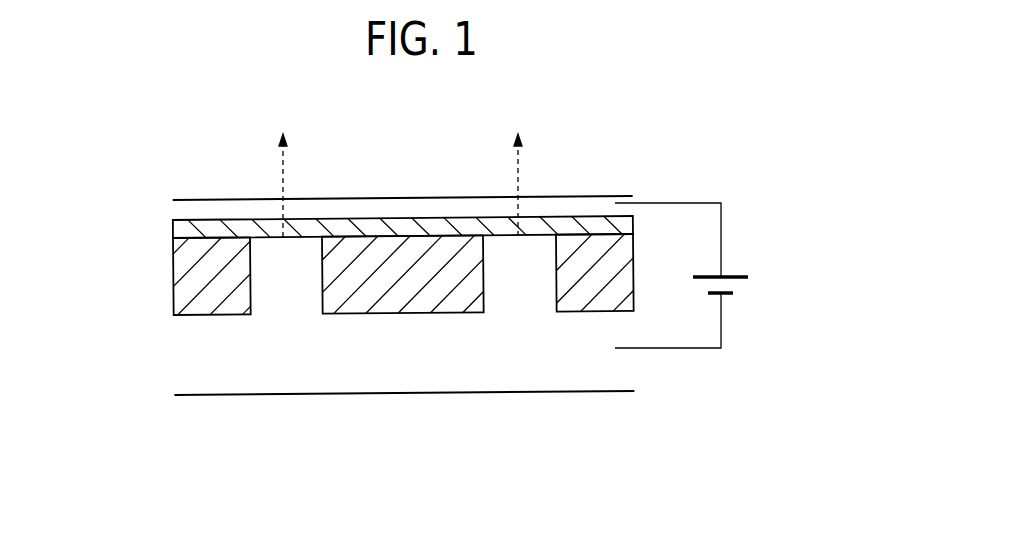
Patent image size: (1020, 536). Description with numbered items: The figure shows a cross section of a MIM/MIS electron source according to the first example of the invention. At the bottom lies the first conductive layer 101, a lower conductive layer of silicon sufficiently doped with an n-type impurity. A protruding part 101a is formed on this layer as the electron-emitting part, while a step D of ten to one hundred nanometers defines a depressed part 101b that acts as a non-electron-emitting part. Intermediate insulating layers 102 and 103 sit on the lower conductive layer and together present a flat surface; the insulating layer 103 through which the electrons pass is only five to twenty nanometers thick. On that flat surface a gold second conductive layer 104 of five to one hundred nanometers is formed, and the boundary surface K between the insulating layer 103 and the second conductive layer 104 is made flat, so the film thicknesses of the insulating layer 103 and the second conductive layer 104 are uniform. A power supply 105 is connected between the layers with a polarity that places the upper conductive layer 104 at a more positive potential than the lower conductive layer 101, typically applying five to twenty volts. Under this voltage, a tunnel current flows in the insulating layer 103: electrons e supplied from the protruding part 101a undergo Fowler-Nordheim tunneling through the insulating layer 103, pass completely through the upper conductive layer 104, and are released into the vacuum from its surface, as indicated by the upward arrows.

The first conductive layer 101 is at (185, 355).
The protruding part 101a is at (272, 287).
The depressed part 101b is at (413, 313).
The intermediate insulating layer 102 is at (180, 285).
The insulating layer 103 is at (177, 229).
The second conductive layer 104 is at (167, 212).
The power supply 105 is at (730, 285).
The step D is at (313, 287).
The boundary surface K is at (550, 216).
The electrons e is at (400, 170).